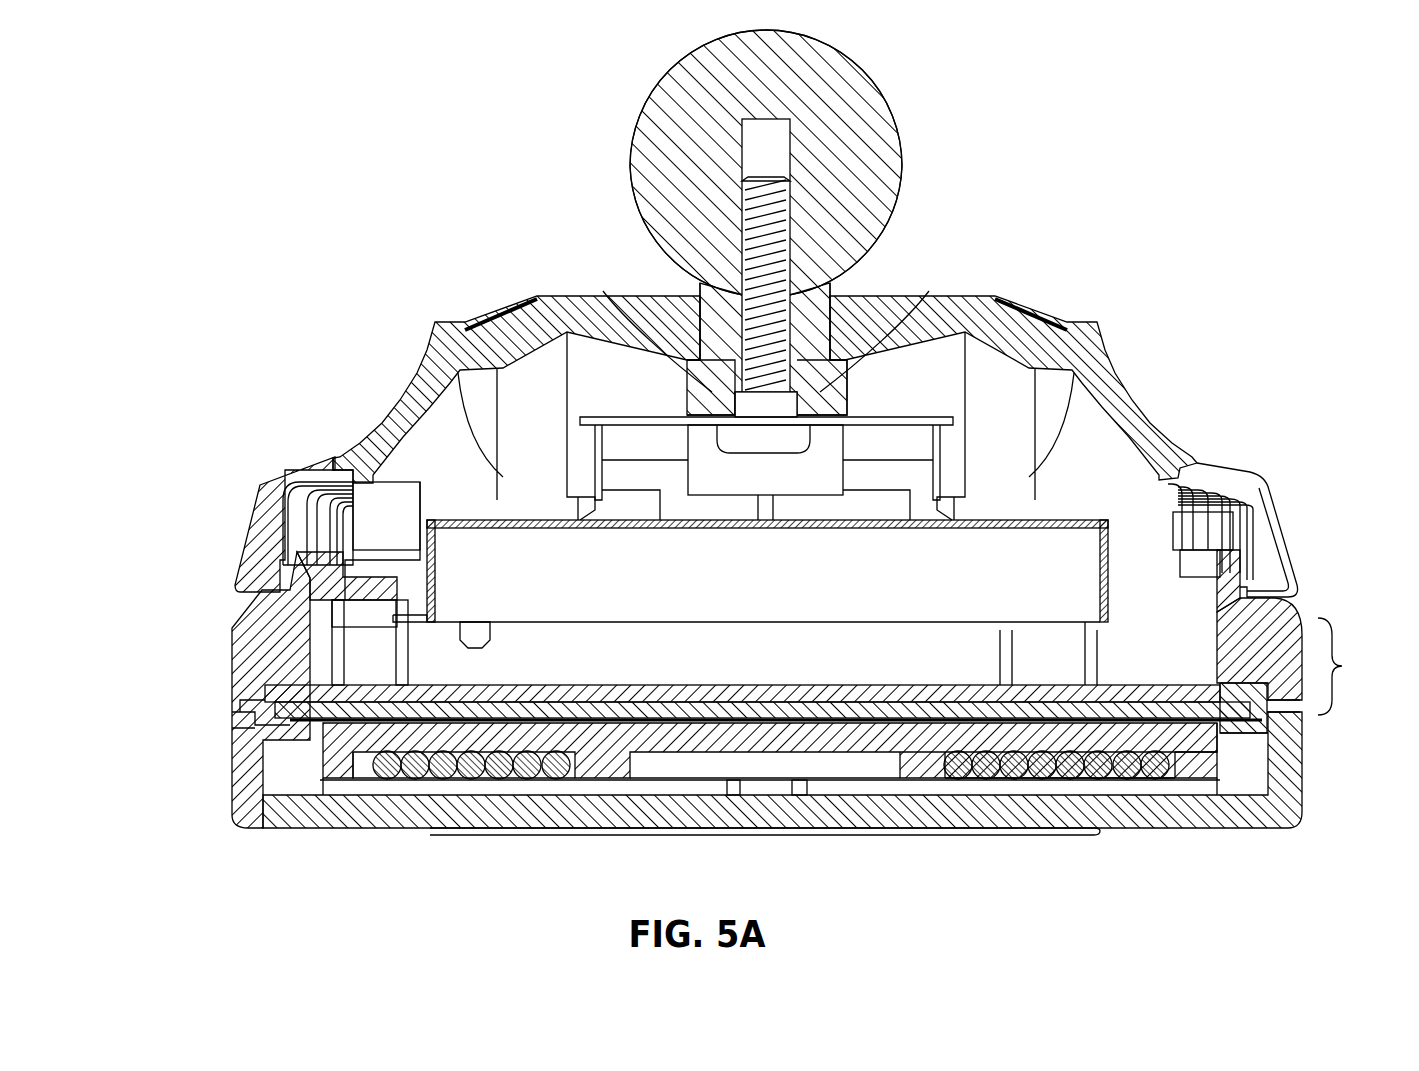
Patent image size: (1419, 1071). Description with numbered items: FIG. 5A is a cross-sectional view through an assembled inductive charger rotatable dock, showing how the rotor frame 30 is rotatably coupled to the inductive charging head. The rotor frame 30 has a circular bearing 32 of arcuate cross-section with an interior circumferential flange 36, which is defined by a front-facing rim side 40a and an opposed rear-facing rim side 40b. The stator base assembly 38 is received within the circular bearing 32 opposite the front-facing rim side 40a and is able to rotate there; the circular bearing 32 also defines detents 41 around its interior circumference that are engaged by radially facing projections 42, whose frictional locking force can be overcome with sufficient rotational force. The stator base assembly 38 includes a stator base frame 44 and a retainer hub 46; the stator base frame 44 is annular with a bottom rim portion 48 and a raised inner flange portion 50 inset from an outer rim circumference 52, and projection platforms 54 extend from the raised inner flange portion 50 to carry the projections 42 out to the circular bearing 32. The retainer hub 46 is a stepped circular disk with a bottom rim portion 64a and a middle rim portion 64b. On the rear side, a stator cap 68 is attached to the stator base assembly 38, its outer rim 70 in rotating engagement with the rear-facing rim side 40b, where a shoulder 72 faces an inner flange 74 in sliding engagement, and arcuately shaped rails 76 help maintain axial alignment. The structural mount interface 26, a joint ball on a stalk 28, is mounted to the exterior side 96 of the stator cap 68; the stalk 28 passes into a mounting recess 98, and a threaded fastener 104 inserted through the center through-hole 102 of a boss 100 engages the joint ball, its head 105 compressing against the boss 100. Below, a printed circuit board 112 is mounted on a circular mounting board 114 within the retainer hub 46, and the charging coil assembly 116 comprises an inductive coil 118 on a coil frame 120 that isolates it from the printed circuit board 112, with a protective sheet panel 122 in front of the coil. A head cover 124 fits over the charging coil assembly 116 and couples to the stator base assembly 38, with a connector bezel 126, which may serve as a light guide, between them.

The structural mount interface 26 is at (889, 112).
The stalk 28 is at (833, 318).
The rotor frame 30 is at (1238, 475).
The circular bearing 32 is at (1272, 528).
The interior circumferential flange 36 is at (312, 480).
The stator base assembly 38 is at (232, 629).
The front-facing rim side 40a is at (1255, 500).
The rear-facing rim side 40b is at (1212, 488).
The detents 41 is at (292, 503).
The radially facing projections 42 is at (338, 462).
The stator base frame 44 is at (1282, 621).
The retainer hub 46 is at (1104, 577).
The bottom rim portion 48 is at (1350, 666).
The raised inner flange portion 50 is at (305, 583).
The outer rim circumference 52 is at (232, 650).
The projection platforms 54 is at (382, 543).
The bottom rim portion 64a is at (338, 690).
The middle rim portion 64b is at (412, 640).
The stator cap 68 is at (558, 305).
The outer rim 70 is at (1215, 495).
The shoulder 72 is at (1180, 480).
The inner flange 74 is at (1198, 488).
The rails 76 is at (345, 538).
The exterior side 96 is at (987, 292).
The mounting recess 98 is at (830, 330).
The boss 100 is at (843, 362).
The center through-hole 102 is at (603, 290).
The threaded fastener 104 is at (733, 327).
The head 105 is at (733, 443).
The printed circuit board 112 is at (860, 718).
The circular mounting board 114 is at (528, 697).
The charging coil assembly 116 is at (1197, 778).
The inductive coil 118 is at (1045, 768).
The coil frame 120 is at (885, 760).
The protective sheet panel 122 is at (800, 795).
The head cover 124 is at (1127, 808).
The connector bezel 126 is at (1300, 716).